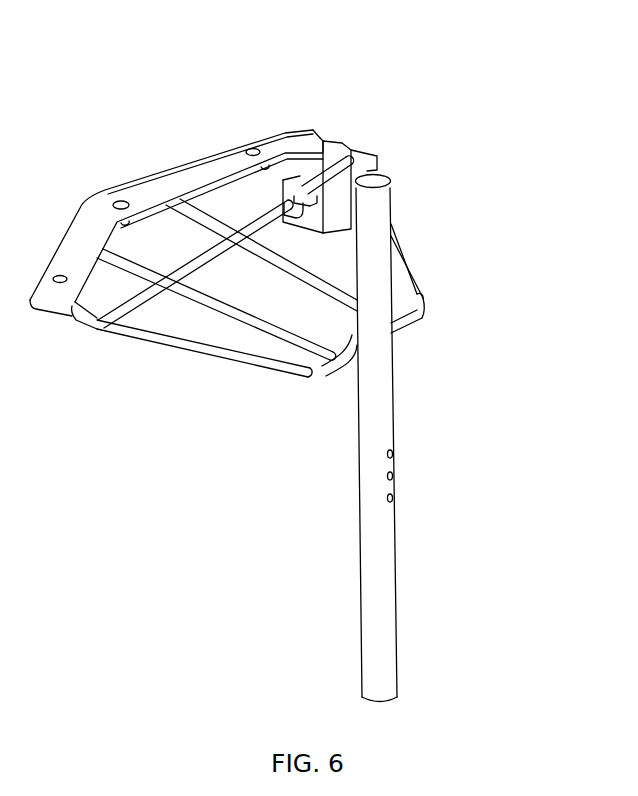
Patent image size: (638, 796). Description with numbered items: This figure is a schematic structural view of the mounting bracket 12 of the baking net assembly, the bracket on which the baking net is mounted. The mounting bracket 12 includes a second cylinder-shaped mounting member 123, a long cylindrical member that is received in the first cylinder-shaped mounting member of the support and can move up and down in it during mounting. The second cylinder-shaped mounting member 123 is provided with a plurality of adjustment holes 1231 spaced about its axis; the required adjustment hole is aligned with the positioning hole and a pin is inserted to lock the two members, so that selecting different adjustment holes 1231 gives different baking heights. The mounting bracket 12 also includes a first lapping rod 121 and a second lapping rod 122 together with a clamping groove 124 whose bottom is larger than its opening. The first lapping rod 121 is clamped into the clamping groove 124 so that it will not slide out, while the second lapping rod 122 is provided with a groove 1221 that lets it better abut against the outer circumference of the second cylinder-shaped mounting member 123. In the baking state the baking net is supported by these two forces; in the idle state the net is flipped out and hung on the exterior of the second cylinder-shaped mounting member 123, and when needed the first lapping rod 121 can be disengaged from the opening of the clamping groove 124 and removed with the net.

The mounting bracket 12 is at (120, 52).
The first lapping rod 121 is at (260, 212).
The second lapping rod 122 is at (223, 353).
The groove 1221 is at (352, 343).
The second cylinder-shaped mounting member 123 is at (373, 385).
The adjustment holes 1231 is at (392, 453).
The clamping groove 124 is at (342, 199).